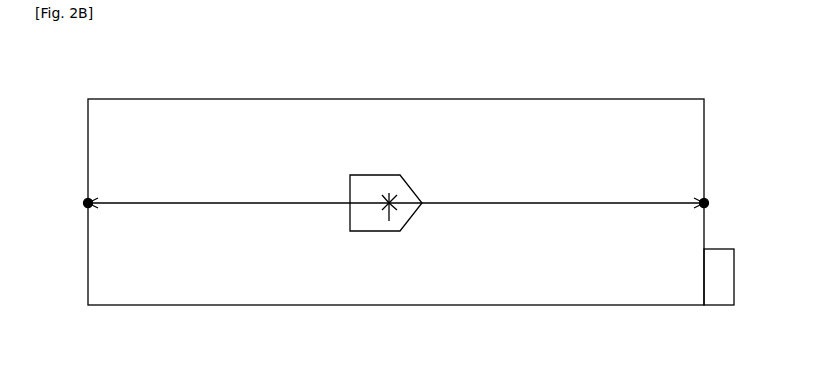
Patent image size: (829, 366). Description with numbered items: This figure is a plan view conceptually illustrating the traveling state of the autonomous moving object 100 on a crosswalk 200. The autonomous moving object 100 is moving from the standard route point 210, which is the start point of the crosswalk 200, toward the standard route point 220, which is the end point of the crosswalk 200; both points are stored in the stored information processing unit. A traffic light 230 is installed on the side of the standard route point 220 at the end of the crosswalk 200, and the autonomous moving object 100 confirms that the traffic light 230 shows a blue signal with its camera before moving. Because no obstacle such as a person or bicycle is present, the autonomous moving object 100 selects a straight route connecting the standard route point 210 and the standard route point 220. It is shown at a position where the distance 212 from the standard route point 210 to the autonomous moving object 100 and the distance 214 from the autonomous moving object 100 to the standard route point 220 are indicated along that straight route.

The autonomous moving object 100 is at (385, 178).
The crosswalk 200 is at (297, 306).
The standard route point 210 is at (88, 203).
The distance L2 212 is at (213, 175).
The distance L1 214 is at (563, 178).
The standard route point 220 is at (704, 203).
The traffic light 230 is at (718, 295).